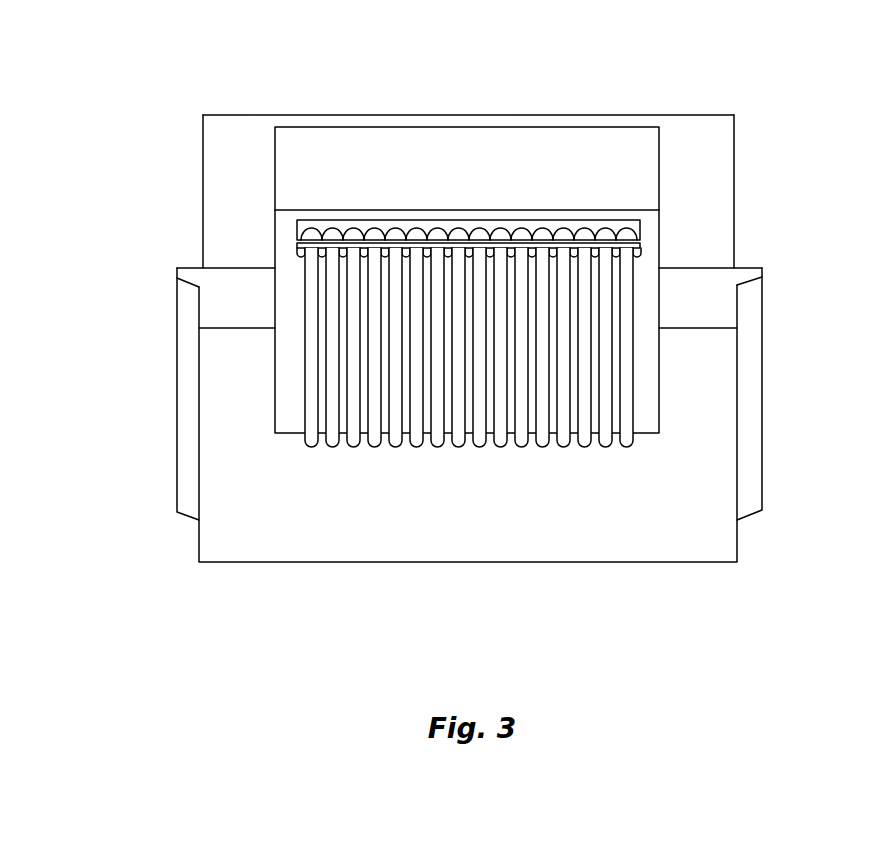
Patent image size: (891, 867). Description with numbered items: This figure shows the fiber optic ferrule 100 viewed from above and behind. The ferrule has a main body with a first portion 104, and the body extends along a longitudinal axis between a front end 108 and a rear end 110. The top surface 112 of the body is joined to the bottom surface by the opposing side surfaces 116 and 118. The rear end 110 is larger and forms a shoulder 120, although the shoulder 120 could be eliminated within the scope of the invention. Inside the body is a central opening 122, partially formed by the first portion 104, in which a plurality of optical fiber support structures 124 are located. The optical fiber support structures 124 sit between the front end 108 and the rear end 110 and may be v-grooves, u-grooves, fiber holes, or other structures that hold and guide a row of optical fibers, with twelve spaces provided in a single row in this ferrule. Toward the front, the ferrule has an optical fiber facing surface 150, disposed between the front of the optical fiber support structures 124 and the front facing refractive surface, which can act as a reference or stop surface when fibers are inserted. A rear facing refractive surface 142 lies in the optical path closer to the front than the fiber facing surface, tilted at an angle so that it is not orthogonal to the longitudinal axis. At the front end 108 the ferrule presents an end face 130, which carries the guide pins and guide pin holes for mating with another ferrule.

The fiber optic ferrule 100 is at (499, 355).
The first portion 104 is at (776, 379).
The front end 108 is at (682, 113).
The rear end 110 is at (730, 555).
The top surface 112 is at (186, 157).
The side surface 116 is at (214, 183).
The side surface 118 is at (735, 153).
The shoulder 120 is at (755, 267).
The central opening 122 is at (551, 147).
The optical fiber support structures 124 is at (498, 445).
The end face 130 is at (435, 113).
The rear facing refractive surface 142 is at (640, 225).
The optical fiber facing surface 150 is at (640, 245).